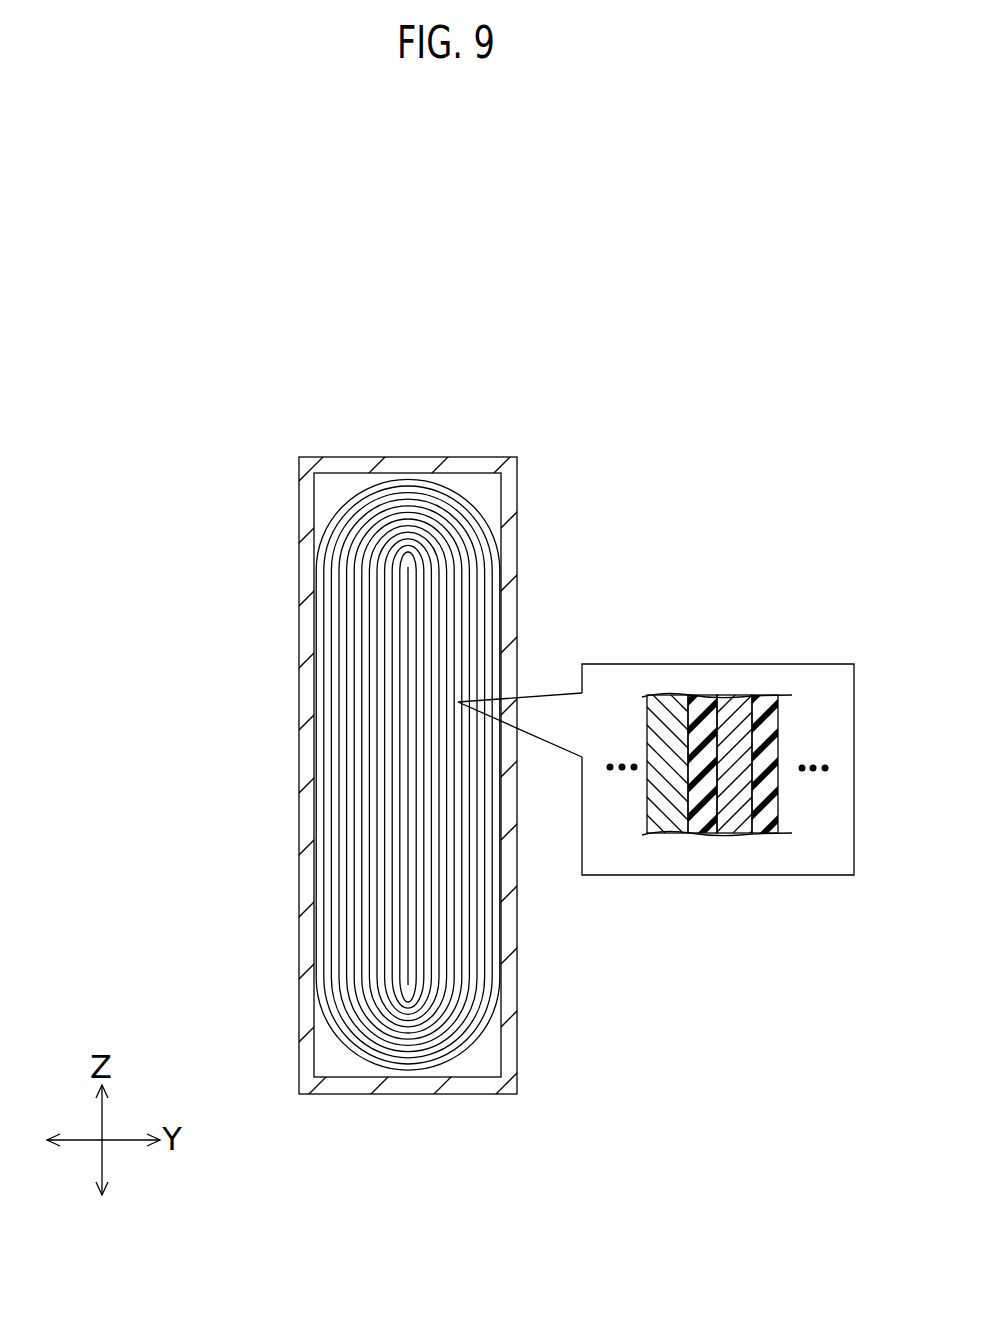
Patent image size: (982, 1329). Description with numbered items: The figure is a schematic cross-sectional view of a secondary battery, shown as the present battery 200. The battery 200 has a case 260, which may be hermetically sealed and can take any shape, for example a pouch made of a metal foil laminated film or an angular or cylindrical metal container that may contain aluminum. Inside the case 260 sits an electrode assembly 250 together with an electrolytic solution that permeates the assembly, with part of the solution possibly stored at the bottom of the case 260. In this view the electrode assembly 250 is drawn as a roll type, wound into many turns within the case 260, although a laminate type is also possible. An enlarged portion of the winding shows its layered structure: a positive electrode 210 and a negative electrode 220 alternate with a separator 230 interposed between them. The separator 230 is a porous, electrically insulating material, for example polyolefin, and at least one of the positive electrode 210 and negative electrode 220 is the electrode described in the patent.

The battery 200 is at (555, 405).
The positive electrode 210 is at (668, 833).
The negative electrode 220 is at (732, 833).
The separator 230 is at (705, 833).
The electrode assembly 250 is at (335, 507).
The case 260 is at (518, 560).